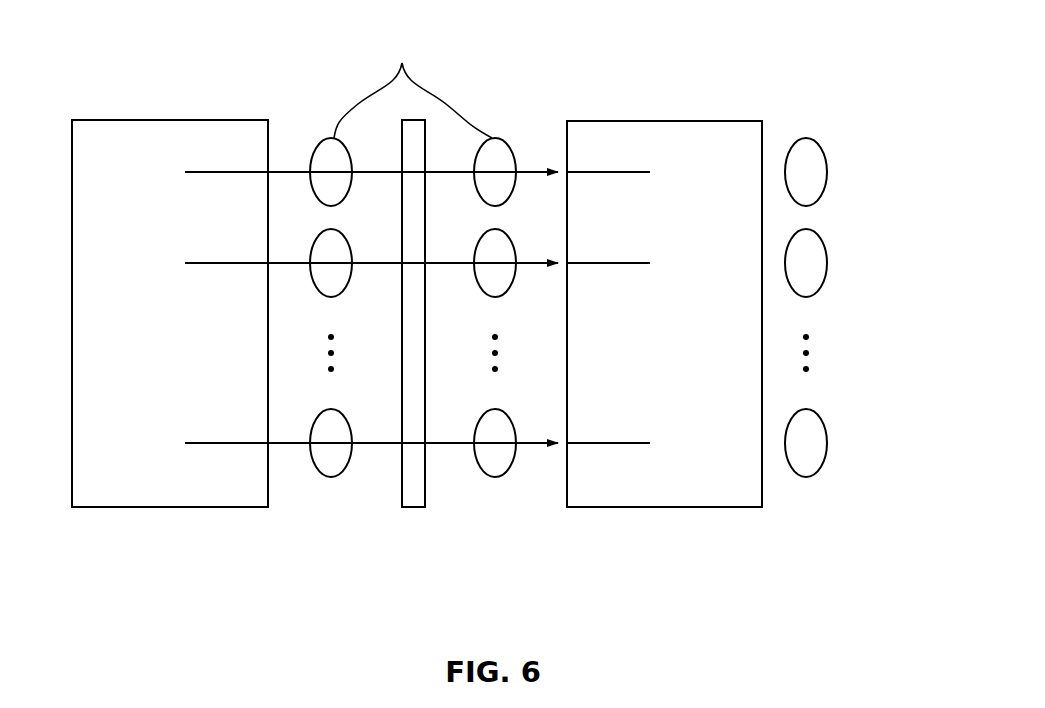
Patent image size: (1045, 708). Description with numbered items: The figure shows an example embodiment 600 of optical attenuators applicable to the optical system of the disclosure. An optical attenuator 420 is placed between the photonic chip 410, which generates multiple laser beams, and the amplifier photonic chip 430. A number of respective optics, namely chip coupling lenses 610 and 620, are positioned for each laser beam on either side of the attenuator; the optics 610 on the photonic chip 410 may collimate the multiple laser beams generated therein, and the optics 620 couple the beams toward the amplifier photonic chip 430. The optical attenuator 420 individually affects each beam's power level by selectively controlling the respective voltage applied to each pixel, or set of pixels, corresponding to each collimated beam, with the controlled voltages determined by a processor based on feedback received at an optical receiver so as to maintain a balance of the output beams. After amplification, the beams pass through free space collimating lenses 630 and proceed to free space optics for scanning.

The example embodiment 600 is at (120, 38).
The photonic chip 410 is at (131, 120).
The optics 610 is at (320, 160).
The optics 620 is at (507, 160).
The optical attenuator 420 is at (415, 507).
The amplifier photonic chip 430 is at (626, 121).
The free space collimating lenses 630 is at (810, 147).